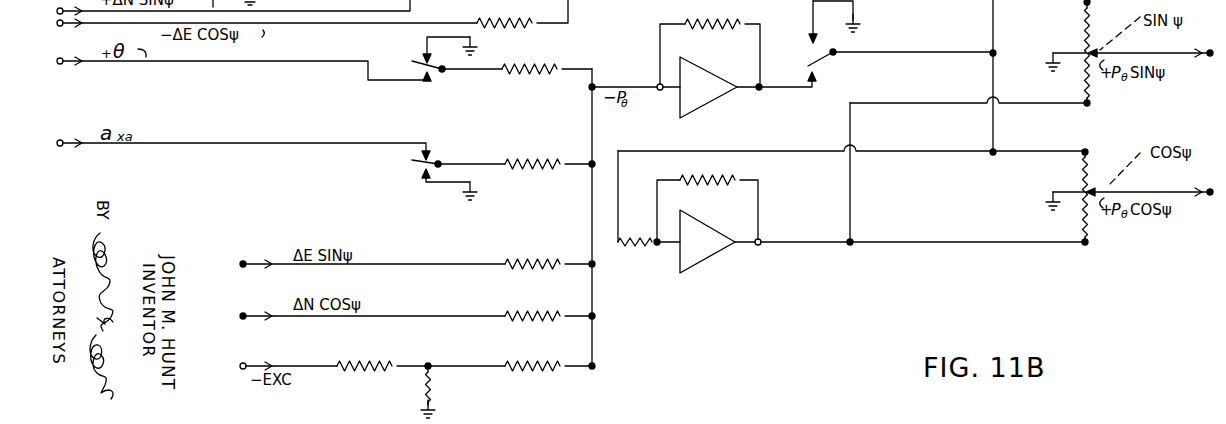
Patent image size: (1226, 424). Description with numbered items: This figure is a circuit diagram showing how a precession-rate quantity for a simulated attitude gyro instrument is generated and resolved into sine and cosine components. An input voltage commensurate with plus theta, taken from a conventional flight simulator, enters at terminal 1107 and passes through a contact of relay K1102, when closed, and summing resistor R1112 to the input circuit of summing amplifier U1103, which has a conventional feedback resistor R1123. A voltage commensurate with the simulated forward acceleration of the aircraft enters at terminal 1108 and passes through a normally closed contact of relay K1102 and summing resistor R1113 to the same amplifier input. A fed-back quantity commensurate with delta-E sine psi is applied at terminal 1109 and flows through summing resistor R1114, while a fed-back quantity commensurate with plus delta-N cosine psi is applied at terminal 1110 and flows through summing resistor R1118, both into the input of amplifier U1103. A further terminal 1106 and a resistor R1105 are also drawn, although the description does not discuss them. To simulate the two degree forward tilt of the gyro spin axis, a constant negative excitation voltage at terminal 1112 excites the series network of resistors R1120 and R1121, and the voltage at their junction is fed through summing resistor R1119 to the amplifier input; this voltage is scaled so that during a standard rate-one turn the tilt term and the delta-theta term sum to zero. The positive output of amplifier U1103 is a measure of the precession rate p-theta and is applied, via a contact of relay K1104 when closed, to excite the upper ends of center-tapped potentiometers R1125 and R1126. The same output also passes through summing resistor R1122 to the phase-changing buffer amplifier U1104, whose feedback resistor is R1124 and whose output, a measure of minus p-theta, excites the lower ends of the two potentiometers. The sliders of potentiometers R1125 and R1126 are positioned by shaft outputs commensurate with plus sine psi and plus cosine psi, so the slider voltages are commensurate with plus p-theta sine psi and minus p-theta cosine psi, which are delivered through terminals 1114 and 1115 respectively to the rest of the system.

The −ΔE cos ψ input terminal 1106 is at (59, 26).
The terminal 1107 is at (60, 65).
The terminal 1108 is at (60, 122).
The terminal 1109 is at (242, 260).
The terminal 1110 is at (243, 314).
The terminal 1112 is at (244, 365).
The terminal 1114 is at (1208, 44).
The terminal 1115 is at (1212, 185).
The relay contacts K1102 is at (406, 42).
The relay contact K1104 is at (835, 42).
The resistor R1105 is at (486, 3).
The summing resistor R1112 is at (507, 50).
The summing resistor R1113 is at (508, 146).
The summing resistor R1114 is at (505, 248).
The summing resistor R1118 is at (505, 298).
The summing resistor R1119 is at (513, 360).
The resistor R1120 is at (352, 358).
The resistor R1121 is at (434, 378).
The summing resistor R1122 is at (612, 250).
The feedback resistor R1123 is at (685, 6).
The feedback resistor R1124 is at (686, 162).
The center-tapped potentiometer R1125 is at (1077, 33).
The center-tapped potentiometer R1126 is at (1076, 187).
The summing amplifier U1103 is at (711, 108).
The phase-changing buffer amplifier U1104 is at (711, 264).